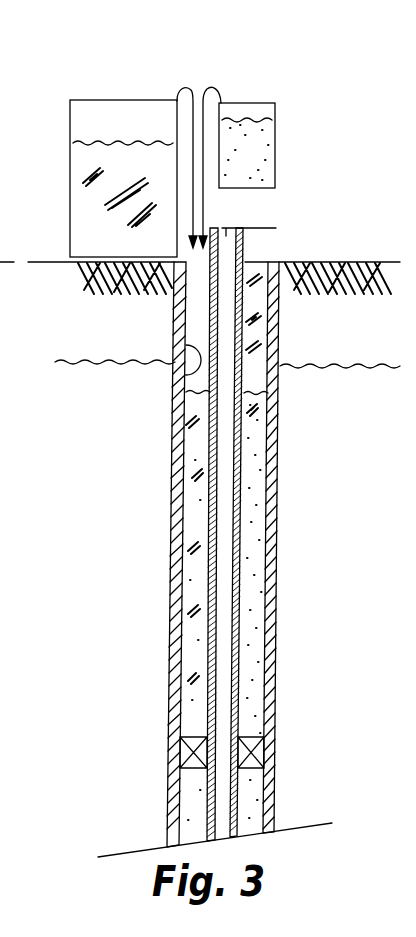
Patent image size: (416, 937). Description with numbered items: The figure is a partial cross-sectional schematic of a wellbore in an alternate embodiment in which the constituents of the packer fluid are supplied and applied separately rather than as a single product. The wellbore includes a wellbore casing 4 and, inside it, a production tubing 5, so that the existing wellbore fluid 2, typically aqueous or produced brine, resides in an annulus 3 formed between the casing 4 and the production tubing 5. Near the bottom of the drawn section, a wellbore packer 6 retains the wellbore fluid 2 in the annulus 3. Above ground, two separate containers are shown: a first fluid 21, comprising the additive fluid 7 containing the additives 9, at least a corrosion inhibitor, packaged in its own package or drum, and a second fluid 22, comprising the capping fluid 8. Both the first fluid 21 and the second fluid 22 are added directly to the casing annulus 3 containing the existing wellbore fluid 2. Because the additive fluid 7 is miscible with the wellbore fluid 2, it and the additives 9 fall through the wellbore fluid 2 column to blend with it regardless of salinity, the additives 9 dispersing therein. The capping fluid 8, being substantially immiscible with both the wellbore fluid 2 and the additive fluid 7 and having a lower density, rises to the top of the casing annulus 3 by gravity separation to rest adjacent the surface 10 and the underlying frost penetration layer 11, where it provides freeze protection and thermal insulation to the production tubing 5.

The wellbore fluid 2 is at (190, 517).
The annulus 3 is at (186, 374).
The wellbore casing 4 is at (168, 652).
The production tubing 5 is at (238, 665).
The wellbore packer 6 is at (262, 752).
The additive fluid 7 is at (289, 468).
The capping fluid 8 is at (130, 191).
The additives 9 is at (300, 561).
The surface 10 is at (285, 262).
The frost penetration layer 11 is at (128, 345).
The first fluid 21 is at (282, 149).
The second fluid 22 is at (70, 182).